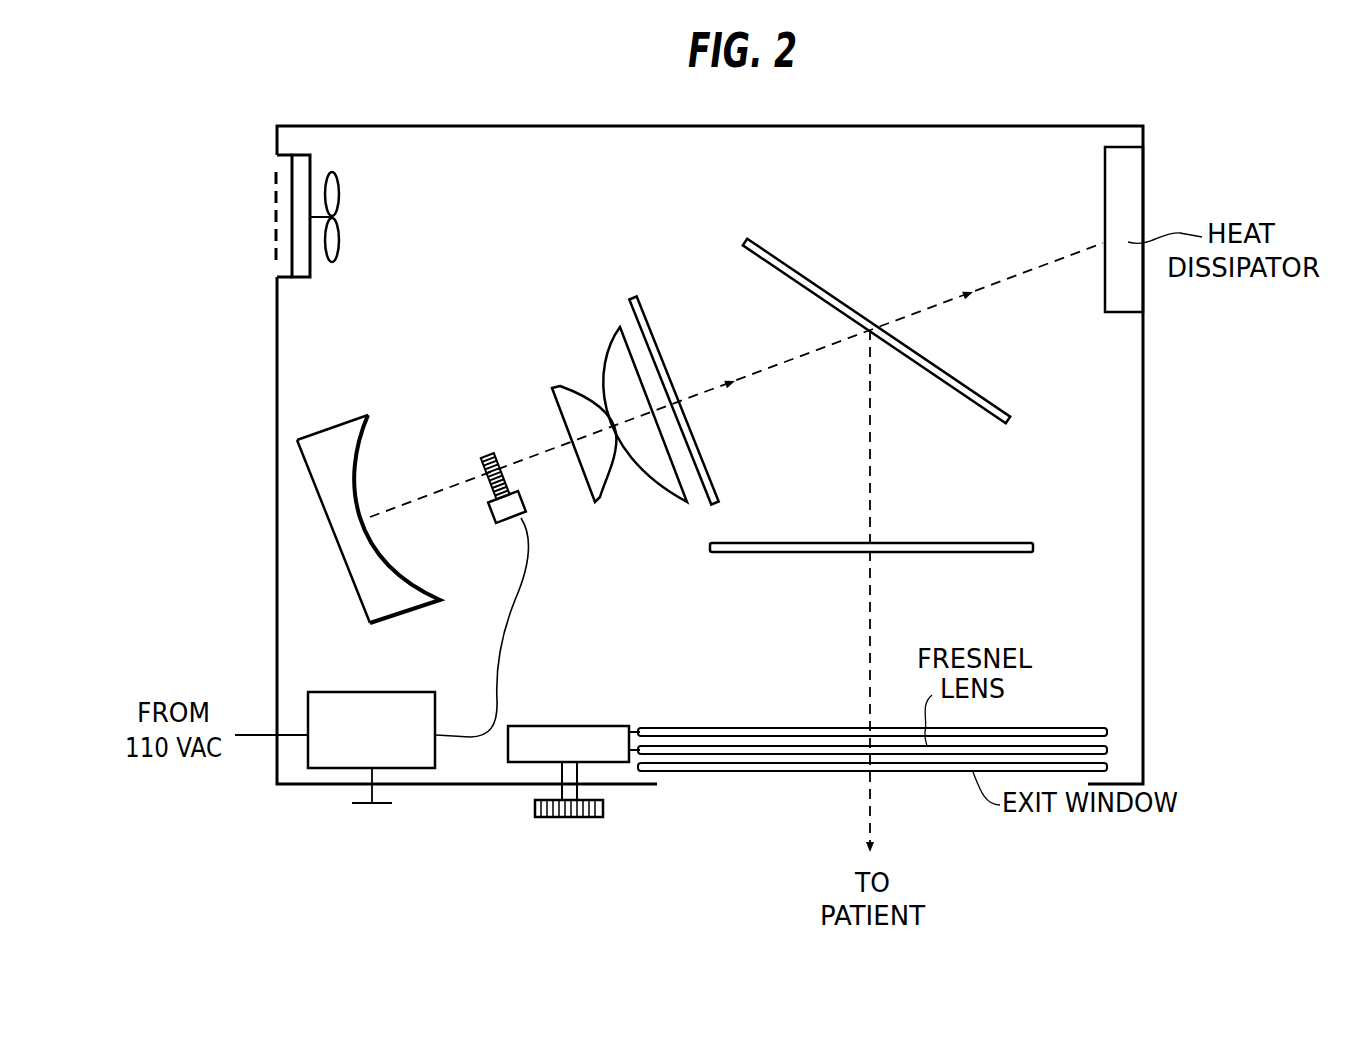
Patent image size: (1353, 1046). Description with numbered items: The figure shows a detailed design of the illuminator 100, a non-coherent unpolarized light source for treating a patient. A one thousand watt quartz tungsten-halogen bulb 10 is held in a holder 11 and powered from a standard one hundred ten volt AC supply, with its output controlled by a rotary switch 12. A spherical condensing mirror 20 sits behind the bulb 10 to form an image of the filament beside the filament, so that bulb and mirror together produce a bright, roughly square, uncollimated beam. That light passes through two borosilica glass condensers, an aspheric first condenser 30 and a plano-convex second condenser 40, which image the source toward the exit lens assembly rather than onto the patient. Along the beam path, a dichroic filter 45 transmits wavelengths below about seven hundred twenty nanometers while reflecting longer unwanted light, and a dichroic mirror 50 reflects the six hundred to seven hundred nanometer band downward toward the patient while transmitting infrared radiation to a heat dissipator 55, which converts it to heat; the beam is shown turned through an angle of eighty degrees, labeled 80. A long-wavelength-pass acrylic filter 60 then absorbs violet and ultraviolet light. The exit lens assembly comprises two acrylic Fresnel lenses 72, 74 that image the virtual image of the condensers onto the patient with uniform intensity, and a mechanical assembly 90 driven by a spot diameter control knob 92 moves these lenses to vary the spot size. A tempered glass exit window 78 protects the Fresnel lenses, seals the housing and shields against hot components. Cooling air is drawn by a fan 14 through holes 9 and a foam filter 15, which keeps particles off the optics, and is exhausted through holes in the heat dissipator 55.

The holes 9 is at (273, 258).
The quartz tungsten-halogen bulb 10 is at (486, 456).
The holder 11 is at (492, 513).
The rotary switch 12 is at (378, 691).
The fan 14 is at (340, 207).
The foam filter 15 is at (299, 278).
The spherical condensing mirror 20 is at (347, 571).
The first condenser 30 is at (599, 499).
The second condenser 40 is at (665, 493).
The dichroic filter 45 is at (715, 491).
The dichroic mirror 50 is at (967, 386).
The heat dissipator 55 is at (1104, 290).
The long-wavelength-pass acrylic filter 60 is at (930, 544).
The Fresnel lens 72 is at (661, 727).
The Fresnel lens 74 is at (717, 746).
The tempered glass exit window 78 is at (703, 773).
The angle 80 is at (866, 417).
The mechanical assembly 90 is at (565, 725).
The spot diameter control knob 92 is at (569, 819).
The illuminator 100 is at (1172, 672).